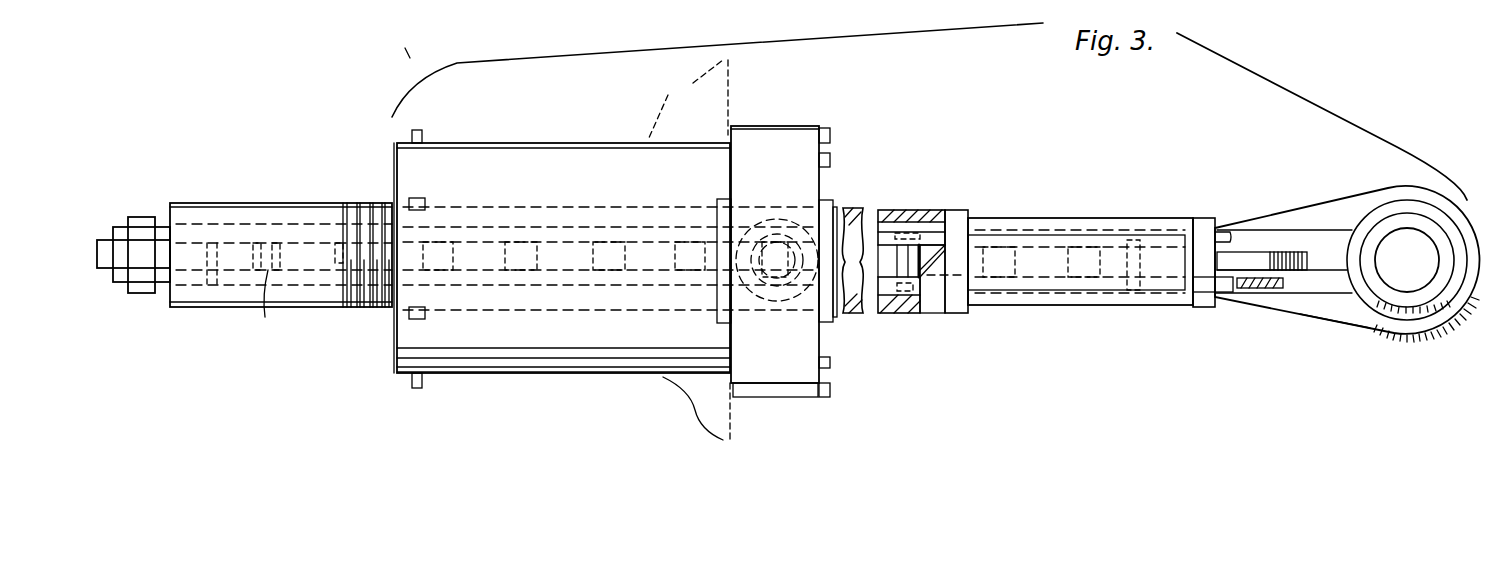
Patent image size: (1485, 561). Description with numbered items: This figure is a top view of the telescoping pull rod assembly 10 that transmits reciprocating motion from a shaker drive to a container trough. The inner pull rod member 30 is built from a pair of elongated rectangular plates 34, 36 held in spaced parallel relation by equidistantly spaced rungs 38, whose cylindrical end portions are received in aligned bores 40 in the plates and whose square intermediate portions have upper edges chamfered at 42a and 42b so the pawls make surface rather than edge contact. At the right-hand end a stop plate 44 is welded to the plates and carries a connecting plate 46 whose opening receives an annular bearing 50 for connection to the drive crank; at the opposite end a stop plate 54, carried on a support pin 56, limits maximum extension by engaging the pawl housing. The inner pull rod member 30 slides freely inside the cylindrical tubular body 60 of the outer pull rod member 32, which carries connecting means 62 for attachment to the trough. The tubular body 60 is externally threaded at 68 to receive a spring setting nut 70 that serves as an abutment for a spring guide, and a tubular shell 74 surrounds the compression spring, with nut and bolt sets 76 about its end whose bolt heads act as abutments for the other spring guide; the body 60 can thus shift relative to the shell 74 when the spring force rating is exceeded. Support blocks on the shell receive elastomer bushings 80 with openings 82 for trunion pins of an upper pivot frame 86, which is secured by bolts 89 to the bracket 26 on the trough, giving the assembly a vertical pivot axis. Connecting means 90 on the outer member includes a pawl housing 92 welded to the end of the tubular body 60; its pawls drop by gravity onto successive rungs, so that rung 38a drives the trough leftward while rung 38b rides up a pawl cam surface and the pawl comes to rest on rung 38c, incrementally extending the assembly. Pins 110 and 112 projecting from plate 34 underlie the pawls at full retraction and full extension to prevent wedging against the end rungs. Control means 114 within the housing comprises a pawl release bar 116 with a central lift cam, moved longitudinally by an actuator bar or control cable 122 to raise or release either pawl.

The pull rod assembly 10 is at (352, 358).
The bracket 26 is at (676, 90).
The inner pull rod member 30 is at (1304, 205).
The outer pull rod member 32 is at (920, 205).
The plate 34 is at (882, 308).
The plate 36 is at (888, 235).
The rungs 38 is at (338, 262).
The rung 38a is at (1085, 285).
The rung 38b is at (1008, 292).
The rung 38c is at (916, 296).
The bores 40 is at (930, 240).
The chamfered edge surface 42a is at (278, 252).
The chamfered edge surface 42b is at (256, 252).
The stop plate 44 is at (1200, 228).
The connecting plate 46 is at (1353, 318).
The annular bearing 50 is at (1422, 305).
The stop plate 54 is at (105, 268).
The support pin 56 is at (155, 293).
The tubular body 60 is at (218, 302).
The connecting means 62 is at (790, 112).
The threaded portion 68 is at (353, 304).
The spring setting nut 70 is at (396, 186).
The tubular shell 74 is at (510, 370).
The nut and bolt sets 76 is at (412, 200).
The elastomer bushings 80 is at (787, 297).
The openings 82 is at (780, 233).
The upper pivot frame 86 is at (777, 385).
The bolts 89 is at (832, 160).
The connecting means 90 is at (1133, 212).
The pawl housing 92 is at (1188, 305).
The pin 110 is at (1133, 290).
The pin 112 is at (210, 205).
The control means 114 is at (1250, 293).
The pawl release bar 116 is at (1230, 300).
The actuator bar or control cable 122 is at (1278, 290).